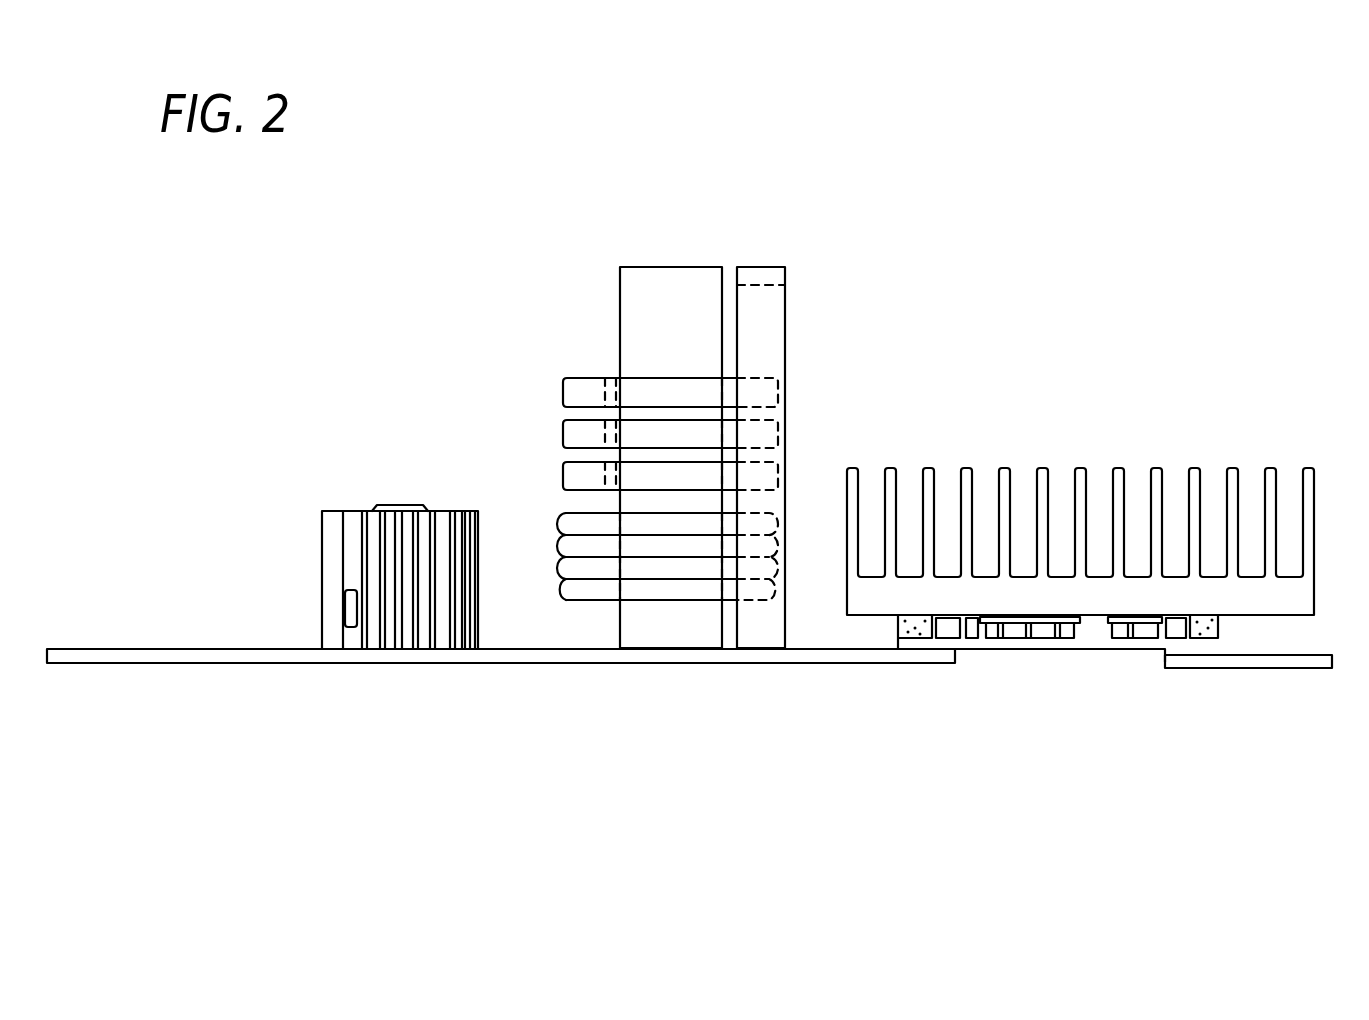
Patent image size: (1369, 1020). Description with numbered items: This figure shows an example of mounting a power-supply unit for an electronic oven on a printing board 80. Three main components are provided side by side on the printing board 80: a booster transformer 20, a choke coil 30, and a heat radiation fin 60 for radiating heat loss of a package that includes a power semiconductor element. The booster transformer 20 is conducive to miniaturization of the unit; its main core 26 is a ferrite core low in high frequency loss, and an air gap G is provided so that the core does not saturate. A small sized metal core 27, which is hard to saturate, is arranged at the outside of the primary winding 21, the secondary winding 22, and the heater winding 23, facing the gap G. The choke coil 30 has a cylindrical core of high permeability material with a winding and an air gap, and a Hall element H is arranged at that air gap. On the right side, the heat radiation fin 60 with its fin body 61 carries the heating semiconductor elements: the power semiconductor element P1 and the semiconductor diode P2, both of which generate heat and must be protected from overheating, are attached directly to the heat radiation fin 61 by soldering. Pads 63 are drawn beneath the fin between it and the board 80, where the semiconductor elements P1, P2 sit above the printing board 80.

The booster transformer 20 is at (674, 400).
The primary winding 21 is at (551, 378).
The secondary winding 22 is at (631, 561).
The heater winding 23 is at (631, 561).
The main core 26 is at (620, 297).
The small sized metal core 27 is at (785, 293).
The air gap G is at (729, 278).
The choke coil 30 is at (378, 435).
The Hall element H is at (345, 605).
The heat radiation fin 60 is at (1102, 520).
The heat radiation fin 61 is at (1277, 495).
The thermal pads 63 is at (1218, 633).
The power semiconductor element P1 is at (1028, 623).
The semiconductor diode P2 is at (1117, 623).
The printing board 80 is at (1252, 673).